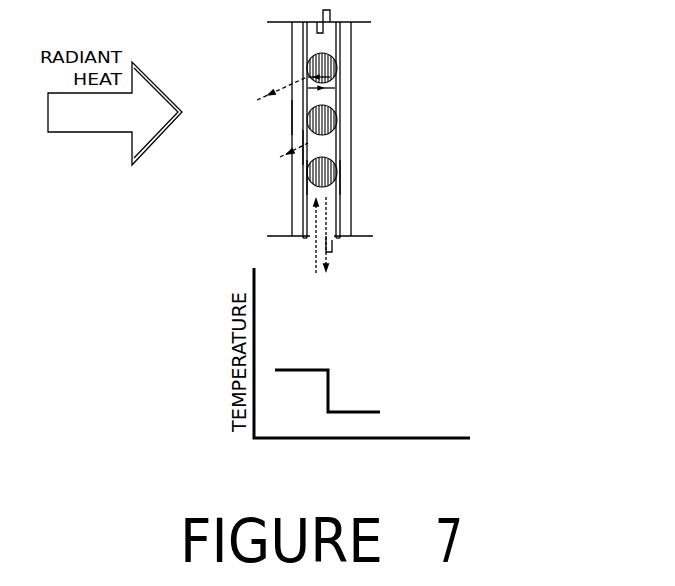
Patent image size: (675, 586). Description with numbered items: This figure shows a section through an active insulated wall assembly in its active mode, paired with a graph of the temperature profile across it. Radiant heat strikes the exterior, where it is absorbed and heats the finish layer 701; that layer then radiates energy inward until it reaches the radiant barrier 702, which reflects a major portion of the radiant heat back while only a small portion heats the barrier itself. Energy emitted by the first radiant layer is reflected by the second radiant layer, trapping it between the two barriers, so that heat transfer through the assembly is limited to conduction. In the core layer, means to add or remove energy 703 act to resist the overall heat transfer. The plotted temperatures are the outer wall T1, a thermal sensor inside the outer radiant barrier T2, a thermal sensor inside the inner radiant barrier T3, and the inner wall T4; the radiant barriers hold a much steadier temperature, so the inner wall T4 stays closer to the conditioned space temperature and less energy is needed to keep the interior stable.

The finish layer 701 is at (289, 74).
The radiant barrier 702 is at (312, 147).
The means to add or remove energy 703 is at (316, 248).
The outer wall temperature T1 is at (289, 118).
The thermal sensor temperature inside outer radiant barrier T2 is at (300, 178).
The thermal sensor temperature inside inner radiant barrier T3 is at (343, 177).
The inner wall temperature T4 is at (353, 115).